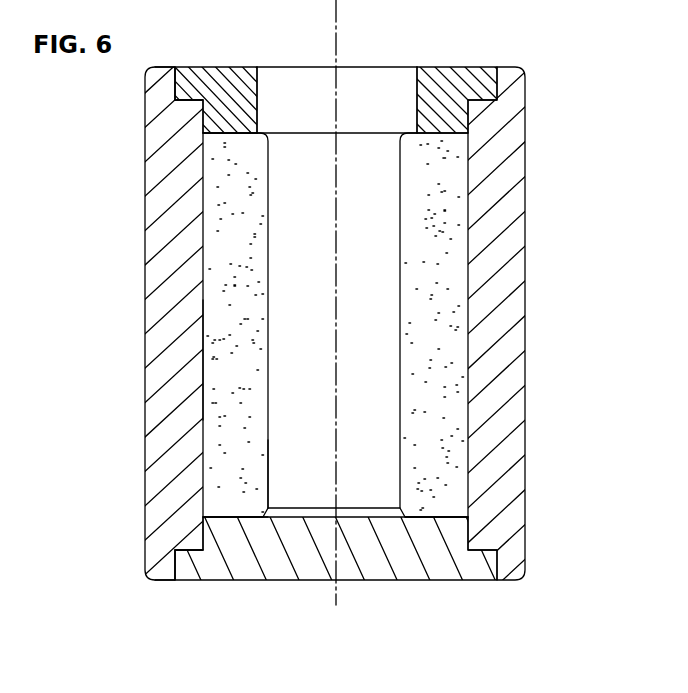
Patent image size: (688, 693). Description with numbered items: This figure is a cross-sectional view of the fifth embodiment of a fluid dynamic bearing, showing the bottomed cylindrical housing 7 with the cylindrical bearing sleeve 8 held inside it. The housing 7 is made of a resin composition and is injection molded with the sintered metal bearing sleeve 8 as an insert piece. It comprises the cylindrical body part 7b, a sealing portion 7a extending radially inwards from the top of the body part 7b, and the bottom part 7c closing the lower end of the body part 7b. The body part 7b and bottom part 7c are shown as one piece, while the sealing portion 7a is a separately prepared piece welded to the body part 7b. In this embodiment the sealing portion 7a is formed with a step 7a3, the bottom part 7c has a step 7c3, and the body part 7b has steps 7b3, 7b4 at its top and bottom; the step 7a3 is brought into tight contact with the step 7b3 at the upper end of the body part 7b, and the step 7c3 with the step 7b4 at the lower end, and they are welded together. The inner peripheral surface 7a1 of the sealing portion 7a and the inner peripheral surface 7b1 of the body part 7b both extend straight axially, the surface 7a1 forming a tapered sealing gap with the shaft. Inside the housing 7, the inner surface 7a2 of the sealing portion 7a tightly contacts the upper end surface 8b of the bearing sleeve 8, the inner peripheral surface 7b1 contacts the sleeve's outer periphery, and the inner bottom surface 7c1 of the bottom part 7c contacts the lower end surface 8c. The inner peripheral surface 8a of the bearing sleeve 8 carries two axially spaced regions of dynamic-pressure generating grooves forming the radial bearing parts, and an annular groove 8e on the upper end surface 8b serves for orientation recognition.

The housing 7 is at (533, 117).
The sealing portion 7a is at (238, 72).
The inner peripheral surface of the sealing portion 7a1 is at (258, 105).
The inner surface of the sealing portion 7a2 is at (216, 140).
The step of the sealing portion 7a3 is at (181, 101).
The body part 7b is at (145, 250).
The inner peripheral surface of the body part 7b1 is at (200, 359).
The step at the upper end of the body part 7b3 is at (184, 70).
The step at the lower end of the body part 7b4 is at (190, 580).
The bottom part 7c is at (262, 558).
The inner bottom surface of the bottom part 7c1 is at (255, 510).
The step of the bottom part 7c3 is at (185, 545).
The bearing sleeve 8 is at (450, 313).
The inner peripheral surface of the bearing sleeve 8a is at (268, 473).
The upper end surface of the bearing sleeve 8b is at (450, 129).
The lower end surface of the bearing sleeve 8c is at (448, 520).
The annular groove 8e is at (435, 130).